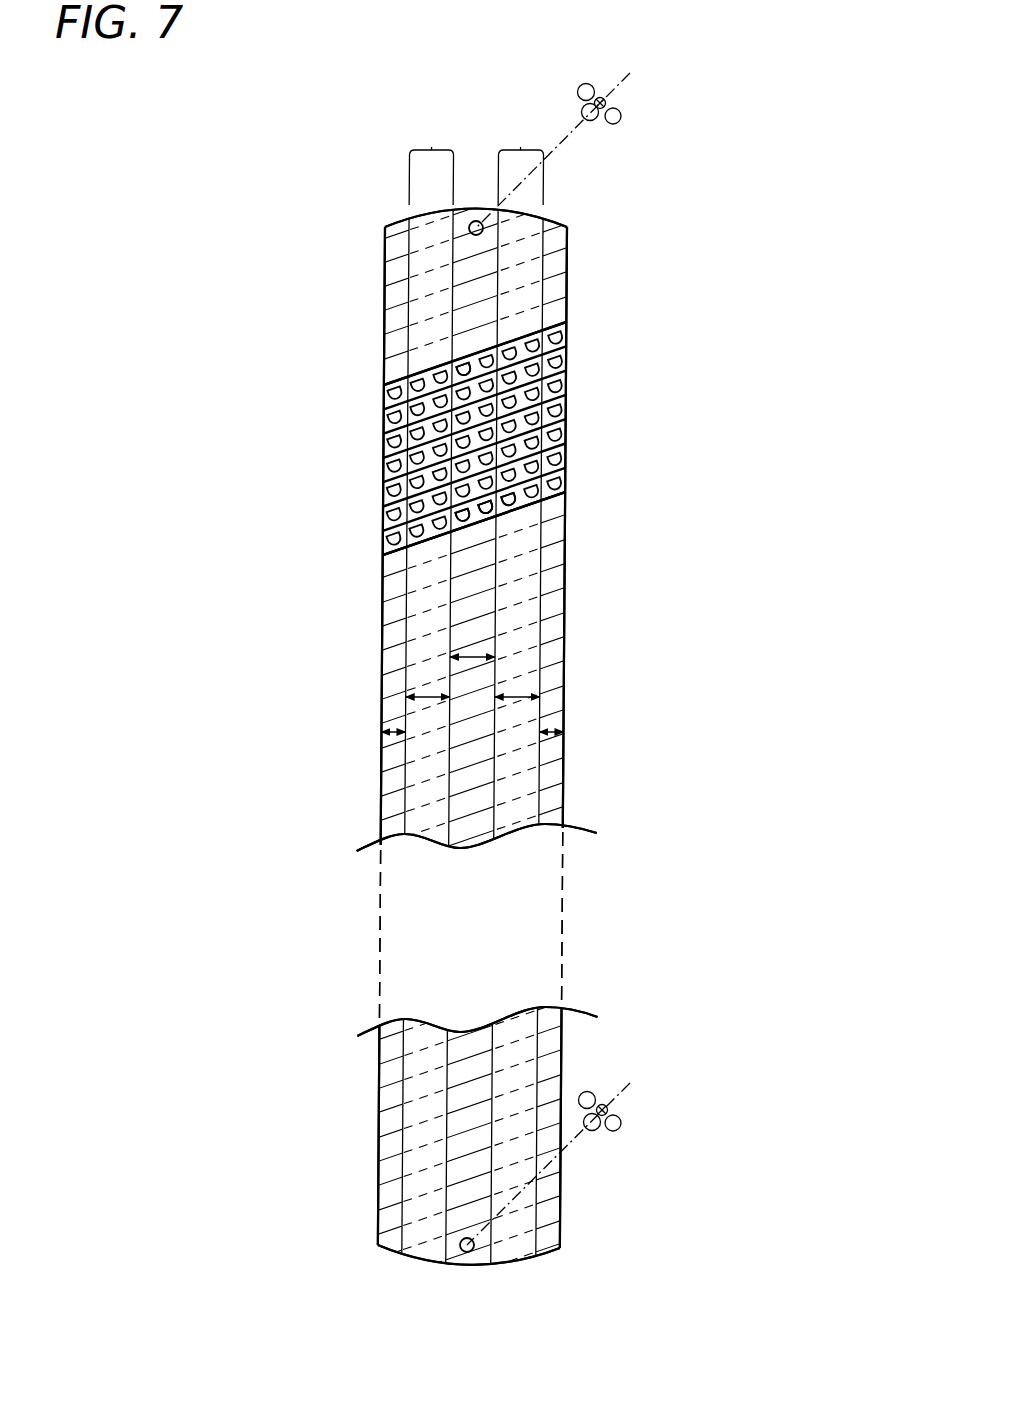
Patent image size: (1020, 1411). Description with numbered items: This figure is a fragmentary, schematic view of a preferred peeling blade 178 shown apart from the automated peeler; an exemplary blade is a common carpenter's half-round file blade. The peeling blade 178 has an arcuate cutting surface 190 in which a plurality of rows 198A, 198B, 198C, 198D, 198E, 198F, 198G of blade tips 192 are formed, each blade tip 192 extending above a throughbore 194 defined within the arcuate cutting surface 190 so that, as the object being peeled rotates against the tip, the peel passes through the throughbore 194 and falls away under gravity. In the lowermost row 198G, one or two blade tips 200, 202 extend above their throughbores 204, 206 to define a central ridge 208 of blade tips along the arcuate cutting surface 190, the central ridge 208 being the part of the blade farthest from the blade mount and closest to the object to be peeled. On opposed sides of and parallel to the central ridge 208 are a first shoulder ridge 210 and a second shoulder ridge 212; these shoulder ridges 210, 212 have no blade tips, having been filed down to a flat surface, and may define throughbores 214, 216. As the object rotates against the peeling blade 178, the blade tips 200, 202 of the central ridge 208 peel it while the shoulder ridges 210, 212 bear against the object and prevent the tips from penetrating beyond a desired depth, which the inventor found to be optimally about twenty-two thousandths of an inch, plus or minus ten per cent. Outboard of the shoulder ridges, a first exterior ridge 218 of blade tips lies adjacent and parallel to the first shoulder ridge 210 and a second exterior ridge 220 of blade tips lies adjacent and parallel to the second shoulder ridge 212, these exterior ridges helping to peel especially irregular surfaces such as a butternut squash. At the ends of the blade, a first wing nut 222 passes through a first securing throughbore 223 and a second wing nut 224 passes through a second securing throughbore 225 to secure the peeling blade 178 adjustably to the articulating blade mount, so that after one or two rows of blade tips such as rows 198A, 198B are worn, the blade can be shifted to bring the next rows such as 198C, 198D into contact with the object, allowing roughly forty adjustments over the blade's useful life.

The peeling blade 178 is at (806, 137).
The arcuate cutting surface 190 is at (576, 252).
The blade tip 192 is at (462, 347).
The throughbore 194 is at (466, 356).
The row of blade tips 198A is at (567, 333).
The row of blade tips 198B is at (567, 360).
The row of blade tips 198C is at (567, 388).
The row of blade tips 198D is at (567, 415).
The row of blade tips 198E is at (567, 443).
The row of blade tips 198F is at (567, 470).
The row of blade tips 198G is at (567, 497).
The blade tip 200 is at (462, 530).
The blade tip 202 is at (506, 516).
The throughbore 204 is at (485, 525).
The throughbore 206 is at (492, 522).
The central ridge 208 is at (478, 657).
The first shoulder ridge 210 is at (430, 697).
The second shoulder ridge 212 is at (518, 697).
The throughbore 214 is at (388, 562).
The throughbore 216 is at (567, 522).
The first exterior ridge 218 is at (384, 732).
The second exterior ridge 220 is at (553, 732).
The first wing nut 222 is at (596, 82).
The first securing throughbore 223 is at (483, 228).
The second wing nut 224 is at (618, 1124).
The second securing throughbore 225 is at (467, 1253).